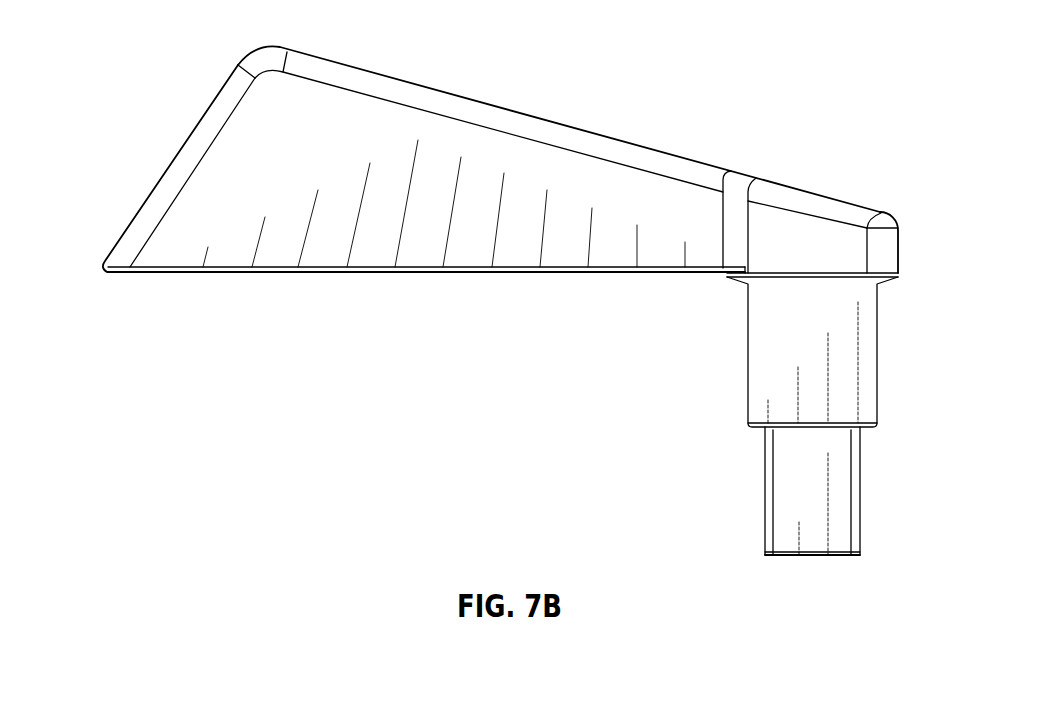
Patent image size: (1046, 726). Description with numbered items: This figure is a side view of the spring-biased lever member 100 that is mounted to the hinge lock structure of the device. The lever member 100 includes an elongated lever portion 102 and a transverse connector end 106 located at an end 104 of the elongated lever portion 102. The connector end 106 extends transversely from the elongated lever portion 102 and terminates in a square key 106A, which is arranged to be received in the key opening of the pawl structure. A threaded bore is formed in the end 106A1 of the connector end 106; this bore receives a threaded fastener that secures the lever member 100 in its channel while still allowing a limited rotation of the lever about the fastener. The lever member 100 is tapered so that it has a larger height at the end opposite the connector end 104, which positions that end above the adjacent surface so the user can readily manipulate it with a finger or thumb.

The spring-biased lever member 100 is at (617, 62).
The elongated lever portion 102 is at (728, 287).
The end of the elongated lever portion 104 is at (833, 198).
The transverse connector end 106 is at (734, 342).
The square key 106A is at (763, 477).
The end of the connector end 106A1 is at (813, 557).